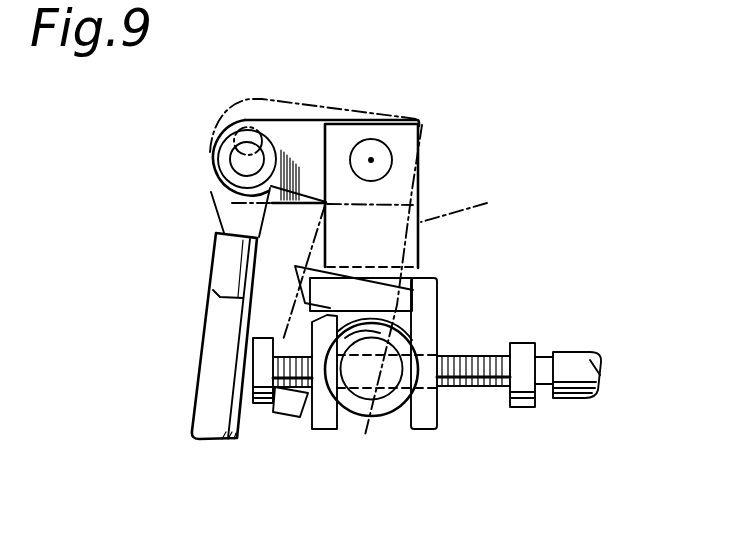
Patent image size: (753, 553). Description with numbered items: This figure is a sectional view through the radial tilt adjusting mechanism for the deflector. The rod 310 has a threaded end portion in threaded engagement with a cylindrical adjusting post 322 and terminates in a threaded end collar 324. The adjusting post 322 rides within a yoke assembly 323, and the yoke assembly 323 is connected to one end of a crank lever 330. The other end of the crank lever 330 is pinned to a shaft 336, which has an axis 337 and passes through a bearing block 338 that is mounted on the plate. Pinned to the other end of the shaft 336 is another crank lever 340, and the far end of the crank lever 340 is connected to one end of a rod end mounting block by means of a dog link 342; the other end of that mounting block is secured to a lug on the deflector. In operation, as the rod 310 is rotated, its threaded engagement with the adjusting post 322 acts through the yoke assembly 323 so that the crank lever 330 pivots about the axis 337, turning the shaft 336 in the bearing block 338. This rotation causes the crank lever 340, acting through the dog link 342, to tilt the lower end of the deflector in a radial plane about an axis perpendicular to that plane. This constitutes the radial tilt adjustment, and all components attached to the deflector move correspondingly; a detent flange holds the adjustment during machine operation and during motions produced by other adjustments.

The rod 310 is at (573, 360).
The cylindrical adjusting post 322 is at (368, 420).
The yoke assembly 323 is at (438, 307).
The threaded end collar 324 is at (265, 405).
The crank lever 330 is at (479, 206).
The shaft 336 is at (391, 157).
The axis 337 is at (372, 158).
The bearing block 338 is at (421, 252).
The crank lever 340 is at (291, 107).
The dog link 342 is at (216, 369).